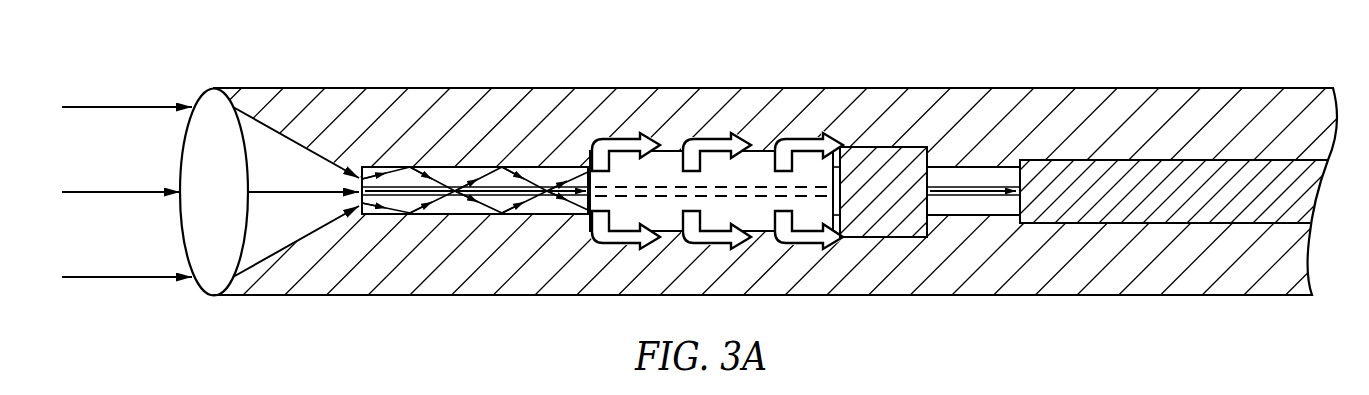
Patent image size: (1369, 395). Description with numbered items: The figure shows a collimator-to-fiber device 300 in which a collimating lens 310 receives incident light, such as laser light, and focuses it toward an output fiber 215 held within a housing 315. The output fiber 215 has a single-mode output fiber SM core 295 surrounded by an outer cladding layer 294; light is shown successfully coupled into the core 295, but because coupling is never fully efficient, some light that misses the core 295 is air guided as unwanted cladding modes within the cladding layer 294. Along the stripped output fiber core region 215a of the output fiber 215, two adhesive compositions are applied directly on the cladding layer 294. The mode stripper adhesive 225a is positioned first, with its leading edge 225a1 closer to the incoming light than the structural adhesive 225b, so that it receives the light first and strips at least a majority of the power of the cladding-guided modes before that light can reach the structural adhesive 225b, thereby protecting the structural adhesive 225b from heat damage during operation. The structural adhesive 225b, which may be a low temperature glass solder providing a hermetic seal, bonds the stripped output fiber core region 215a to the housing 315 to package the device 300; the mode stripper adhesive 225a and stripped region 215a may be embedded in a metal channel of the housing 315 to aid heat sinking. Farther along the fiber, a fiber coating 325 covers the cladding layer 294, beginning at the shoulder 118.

The collimator-to-fiber device 300 is at (1190, 23).
The collimating lens 310 is at (214, 192).
The housing 315 is at (329, 88).
The output fiber 215 is at (369, 232).
The stripped output fiber core region 215a is at (1020, 43).
The mode stripper adhesive 225a is at (765, 153).
The leading edge of the mode stripper adhesive 225a1 is at (583, 217).
The structural adhesive 225b is at (883, 155).
The cladding layer 294 is at (418, 201).
The output fiber SM core 295 is at (478, 190).
The shoulder 118 is at (1008, 162).
The fiber coating 325 is at (1176, 163).